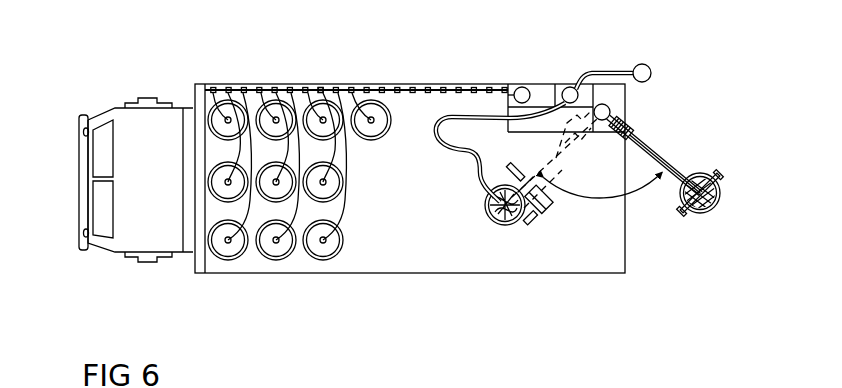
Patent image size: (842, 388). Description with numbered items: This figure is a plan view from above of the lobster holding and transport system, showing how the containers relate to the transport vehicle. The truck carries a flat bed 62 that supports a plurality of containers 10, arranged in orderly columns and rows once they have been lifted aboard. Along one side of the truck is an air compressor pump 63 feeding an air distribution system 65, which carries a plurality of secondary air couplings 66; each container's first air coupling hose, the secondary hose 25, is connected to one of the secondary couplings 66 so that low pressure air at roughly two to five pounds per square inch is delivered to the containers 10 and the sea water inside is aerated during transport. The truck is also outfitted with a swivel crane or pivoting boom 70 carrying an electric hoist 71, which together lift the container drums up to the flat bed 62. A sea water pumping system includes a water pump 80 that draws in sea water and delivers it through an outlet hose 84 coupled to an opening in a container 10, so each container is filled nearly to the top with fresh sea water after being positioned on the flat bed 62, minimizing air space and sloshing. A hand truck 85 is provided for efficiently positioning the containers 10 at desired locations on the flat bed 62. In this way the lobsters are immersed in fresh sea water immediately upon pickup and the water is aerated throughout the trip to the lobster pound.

The container 10 is at (378, 140).
The secondary hose 25 is at (342, 203).
The flat bed 62 is at (627, 252).
The air compressor pump 63 is at (521, 88).
The air distribution system 65 is at (412, 84).
The secondary air coupling 66 is at (322, 88).
The swivel crane or pivoting boom 70 is at (608, 112).
The electric hoist 71 is at (632, 126).
The water pump 80 is at (572, 87).
The outlet hose 84 is at (439, 149).
The hand truck 85 is at (543, 227).